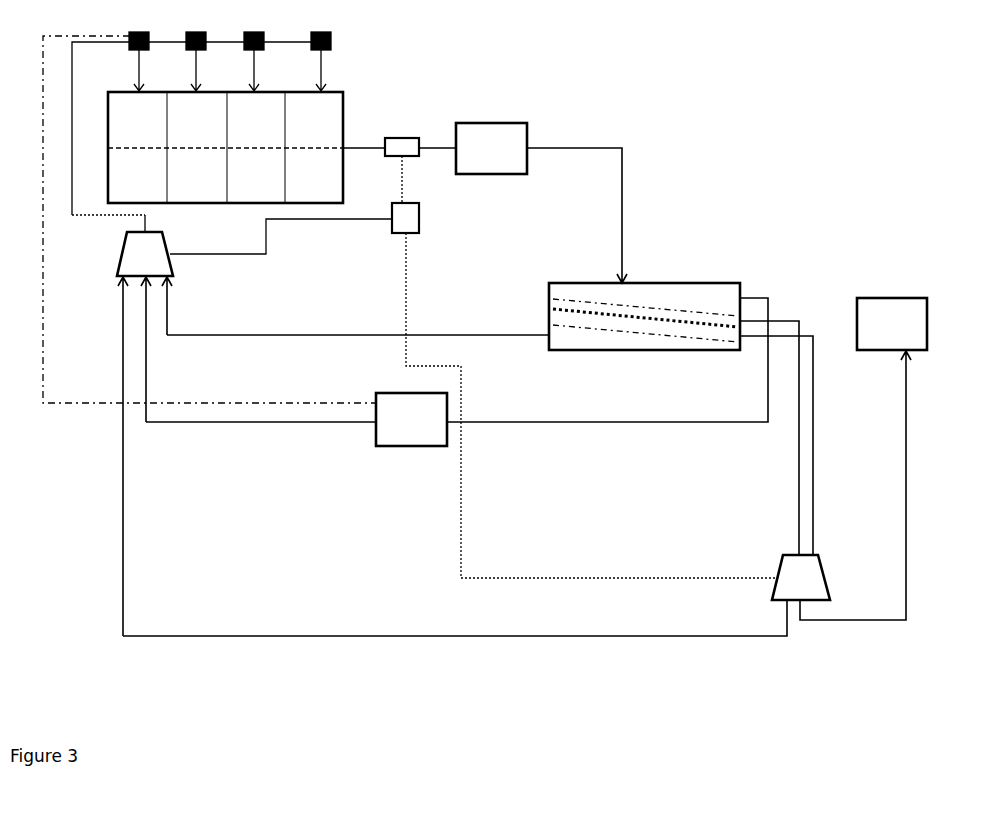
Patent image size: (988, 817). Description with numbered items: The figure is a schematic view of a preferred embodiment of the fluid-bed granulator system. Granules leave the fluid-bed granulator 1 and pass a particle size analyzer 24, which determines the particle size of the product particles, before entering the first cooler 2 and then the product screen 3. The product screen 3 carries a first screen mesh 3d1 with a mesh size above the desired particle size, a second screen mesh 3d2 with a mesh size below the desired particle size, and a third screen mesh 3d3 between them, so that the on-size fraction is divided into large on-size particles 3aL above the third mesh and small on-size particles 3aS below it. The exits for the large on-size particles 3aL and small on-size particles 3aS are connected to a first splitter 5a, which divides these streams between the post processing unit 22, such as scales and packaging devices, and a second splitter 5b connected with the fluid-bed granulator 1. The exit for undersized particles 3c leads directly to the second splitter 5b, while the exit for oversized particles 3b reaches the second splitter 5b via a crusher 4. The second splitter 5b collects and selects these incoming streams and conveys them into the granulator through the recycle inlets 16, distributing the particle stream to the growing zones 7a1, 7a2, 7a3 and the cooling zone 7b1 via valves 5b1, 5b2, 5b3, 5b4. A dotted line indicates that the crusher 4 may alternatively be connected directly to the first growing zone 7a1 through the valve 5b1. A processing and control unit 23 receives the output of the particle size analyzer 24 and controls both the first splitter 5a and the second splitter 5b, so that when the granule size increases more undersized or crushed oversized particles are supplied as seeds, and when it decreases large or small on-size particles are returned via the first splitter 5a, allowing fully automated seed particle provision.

The fluid-bed granulator 1 is at (343, 100).
The first cooler 2 is at (490, 123).
The product screen 3 is at (674, 283).
The large on-size particles 3aL is at (741, 319).
The small on-size particles 3aS is at (743, 337).
The exit for oversized particles 3b is at (741, 310).
The exit for undersized particles 3c is at (548, 335).
The first screen mesh 3d1 is at (694, 310).
The second screen mesh 3d2 is at (643, 334).
The third screen mesh 3d3 is at (672, 322).
The crusher 4 is at (412, 446).
The first splitter 5a is at (822, 567).
The second splitter 5b is at (166, 244).
The valve 5b1 is at (143, 48).
The valve 5b2 is at (202, 47).
The valve 5b3 is at (260, 48).
The valve 5b4 is at (327, 48).
The first growing zone 7a1 is at (149, 137).
The cooling zone 7b1 is at (202, 137).
The growing zone 7a2 is at (259, 137).
The growing zone 7a3 is at (313, 137).
The recycle inlet 16 is at (212, 80).
The post processing unit 22 is at (874, 298).
The processing and control unit 23 is at (425, 225).
The particle size analyzer 24 is at (401, 138).